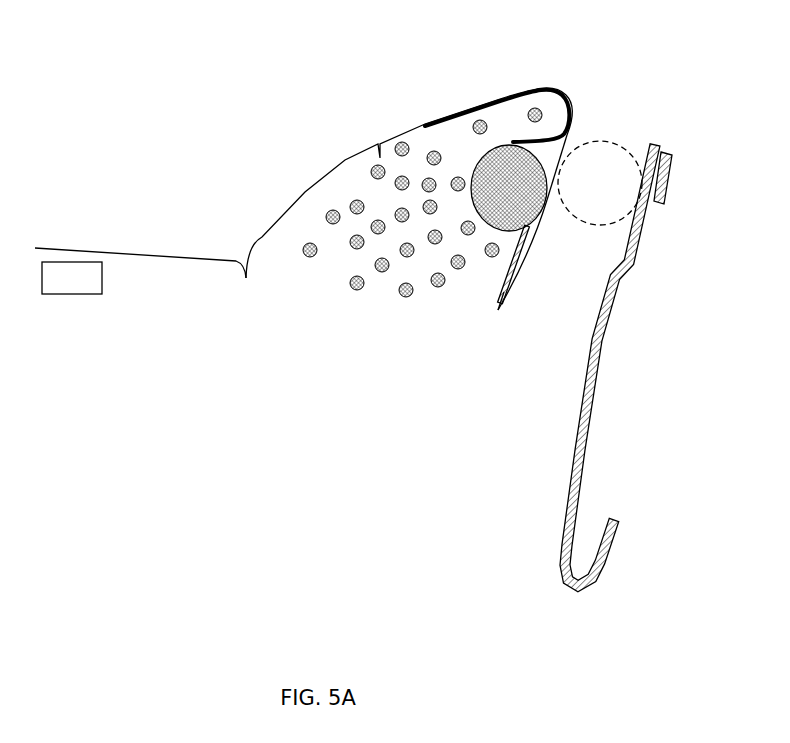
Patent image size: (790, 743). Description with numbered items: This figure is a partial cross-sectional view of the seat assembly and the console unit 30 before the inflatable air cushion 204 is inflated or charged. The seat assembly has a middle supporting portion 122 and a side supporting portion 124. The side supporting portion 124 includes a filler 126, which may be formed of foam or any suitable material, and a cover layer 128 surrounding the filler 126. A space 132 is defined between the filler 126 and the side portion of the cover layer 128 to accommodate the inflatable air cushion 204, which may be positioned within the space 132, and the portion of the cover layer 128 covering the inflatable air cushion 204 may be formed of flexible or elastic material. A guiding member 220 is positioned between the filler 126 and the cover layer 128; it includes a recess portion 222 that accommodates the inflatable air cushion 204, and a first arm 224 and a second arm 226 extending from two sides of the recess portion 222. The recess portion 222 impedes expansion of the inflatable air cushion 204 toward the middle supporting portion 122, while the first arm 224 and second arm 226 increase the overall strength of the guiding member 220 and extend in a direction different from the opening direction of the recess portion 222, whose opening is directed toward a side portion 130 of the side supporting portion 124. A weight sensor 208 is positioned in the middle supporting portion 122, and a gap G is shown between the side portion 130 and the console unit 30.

The middle supporting portion 122 is at (77, 246).
The side supporting portion 124 is at (349, 160).
The filler 126 is at (328, 211).
The cover layer 128 is at (557, 93).
The side portion 130 is at (540, 228).
The space 132 is at (552, 150).
The inflatable air cushion 204 is at (507, 145).
The weight sensor 208 is at (77, 294).
The guiding member 220 is at (441, 110).
The recess portion 222 is at (470, 200).
The first arm 224 is at (496, 97).
The second arm 226 is at (500, 277).
The console unit 30 is at (637, 243).
The gap G is at (625, 138).